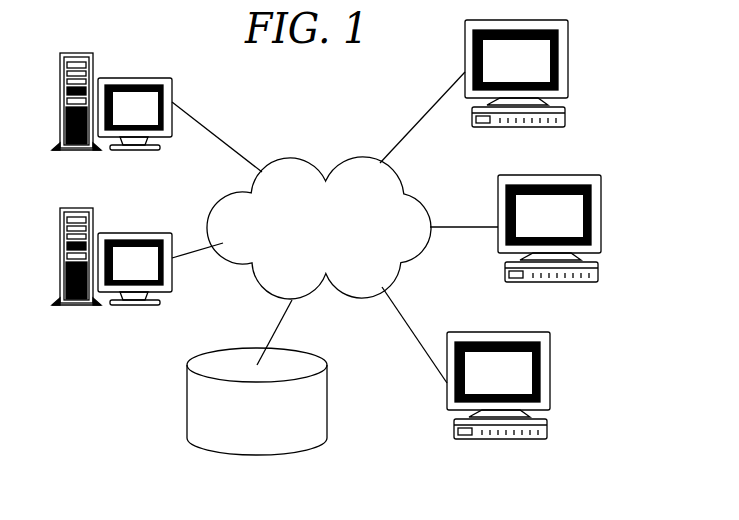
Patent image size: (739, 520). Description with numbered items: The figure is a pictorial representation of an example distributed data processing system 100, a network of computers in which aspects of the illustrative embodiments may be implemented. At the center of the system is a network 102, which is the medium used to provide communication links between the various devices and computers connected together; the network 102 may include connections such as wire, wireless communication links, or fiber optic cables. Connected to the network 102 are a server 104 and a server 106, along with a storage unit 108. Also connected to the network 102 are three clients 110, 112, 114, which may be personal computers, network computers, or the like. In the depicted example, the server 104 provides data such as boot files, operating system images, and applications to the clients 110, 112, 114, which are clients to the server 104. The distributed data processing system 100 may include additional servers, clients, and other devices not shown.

The distributed data processing system 100 is at (141, 385).
The network 102 is at (291, 158).
The server 104 is at (130, 71).
The server 106 is at (130, 226).
The storage unit 108 is at (327, 390).
The client 110 is at (568, 64).
The client 112 is at (603, 218).
The client 114 is at (552, 378).